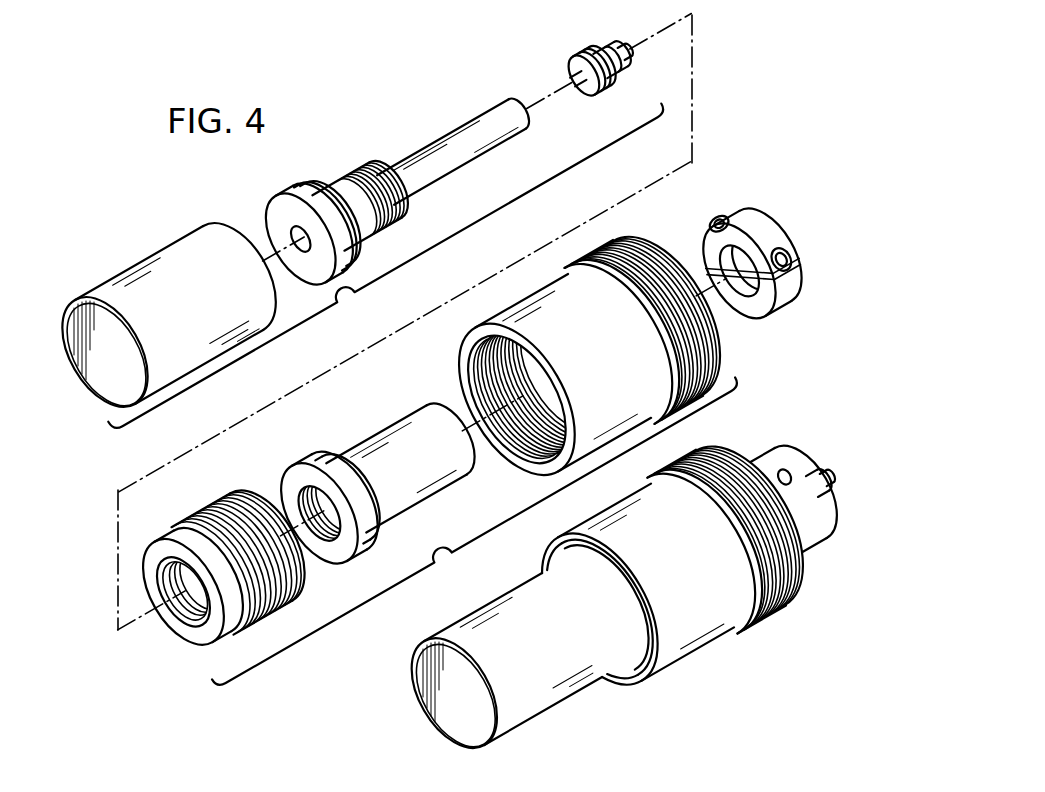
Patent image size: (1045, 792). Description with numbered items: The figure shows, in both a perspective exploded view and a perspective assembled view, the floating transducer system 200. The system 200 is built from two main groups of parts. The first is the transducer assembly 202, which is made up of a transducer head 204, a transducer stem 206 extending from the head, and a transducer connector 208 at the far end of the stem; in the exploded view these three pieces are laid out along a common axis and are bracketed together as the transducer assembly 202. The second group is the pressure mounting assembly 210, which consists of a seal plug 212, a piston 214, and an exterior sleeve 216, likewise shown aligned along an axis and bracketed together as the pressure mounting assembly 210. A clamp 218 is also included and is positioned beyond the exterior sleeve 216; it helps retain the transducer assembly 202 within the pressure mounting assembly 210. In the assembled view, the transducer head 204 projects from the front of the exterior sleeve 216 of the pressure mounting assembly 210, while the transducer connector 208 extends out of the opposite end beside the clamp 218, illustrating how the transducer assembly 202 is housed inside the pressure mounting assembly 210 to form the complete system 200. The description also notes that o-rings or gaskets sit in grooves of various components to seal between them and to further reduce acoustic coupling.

The floating transducer system 200 is at (157, 170).
The transducer assembly 202 is at (387, 267).
The transducer head 204 is at (160, 274).
The transducer stem 206 is at (405, 165).
The transducer connector 208 is at (590, 50).
The pressure mounting assembly 210 is at (476, 532).
The seal plug 212 is at (170, 519).
The piston 214 is at (332, 450).
The exterior sleeve 216 is at (487, 335).
The clamp 218 is at (748, 224).